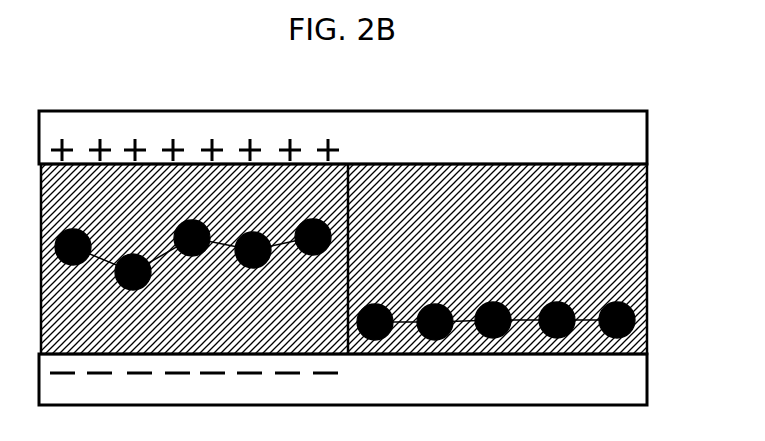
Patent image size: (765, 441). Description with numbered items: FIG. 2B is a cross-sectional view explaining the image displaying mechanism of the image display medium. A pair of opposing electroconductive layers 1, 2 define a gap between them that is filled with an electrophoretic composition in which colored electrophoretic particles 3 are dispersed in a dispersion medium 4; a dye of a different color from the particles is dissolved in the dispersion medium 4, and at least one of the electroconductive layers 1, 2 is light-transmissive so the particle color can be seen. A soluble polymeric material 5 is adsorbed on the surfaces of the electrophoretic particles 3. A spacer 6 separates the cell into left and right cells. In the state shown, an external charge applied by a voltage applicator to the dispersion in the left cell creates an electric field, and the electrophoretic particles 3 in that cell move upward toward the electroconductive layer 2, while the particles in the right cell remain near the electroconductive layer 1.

The electroconductive layer 1 is at (637, 373).
The electroconductive layer 2 is at (627, 131).
The electrophoretic particles 3 is at (637, 308).
The dispersion medium 4 is at (630, 187).
The soluble polymeric material 5 is at (643, 283).
The spacer 6 is at (370, 178).